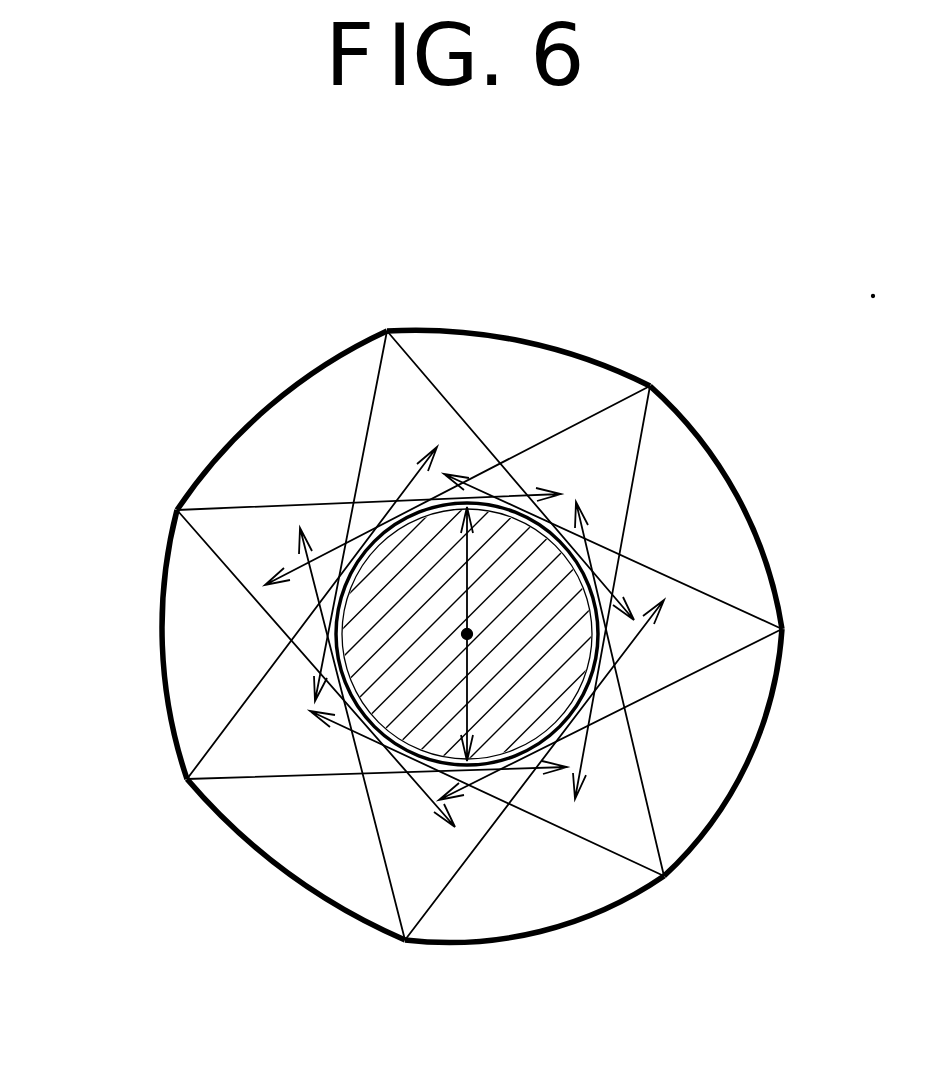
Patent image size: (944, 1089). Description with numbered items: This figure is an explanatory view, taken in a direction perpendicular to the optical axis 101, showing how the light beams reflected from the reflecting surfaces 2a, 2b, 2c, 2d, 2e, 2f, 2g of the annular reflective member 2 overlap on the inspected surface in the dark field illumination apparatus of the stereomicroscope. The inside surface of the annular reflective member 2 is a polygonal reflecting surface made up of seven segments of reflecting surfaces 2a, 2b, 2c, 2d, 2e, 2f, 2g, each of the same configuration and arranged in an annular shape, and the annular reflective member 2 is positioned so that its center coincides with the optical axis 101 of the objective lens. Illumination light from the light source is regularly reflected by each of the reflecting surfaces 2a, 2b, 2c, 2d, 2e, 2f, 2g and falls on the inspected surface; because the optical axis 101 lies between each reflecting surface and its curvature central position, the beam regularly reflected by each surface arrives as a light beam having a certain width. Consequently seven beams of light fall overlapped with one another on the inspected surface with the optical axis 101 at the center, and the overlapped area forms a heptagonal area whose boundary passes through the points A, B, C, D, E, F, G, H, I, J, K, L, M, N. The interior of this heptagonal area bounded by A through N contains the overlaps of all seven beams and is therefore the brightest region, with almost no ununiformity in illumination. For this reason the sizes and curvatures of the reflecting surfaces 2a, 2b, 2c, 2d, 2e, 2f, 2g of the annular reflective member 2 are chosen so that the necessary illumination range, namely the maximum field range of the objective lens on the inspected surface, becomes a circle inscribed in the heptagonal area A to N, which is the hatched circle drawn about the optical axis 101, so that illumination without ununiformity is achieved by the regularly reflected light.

The annular reflective member 2 is at (643, 330).
The reflecting surface 2a is at (171, 676).
The reflecting surface 2b is at (268, 860).
The reflecting surface 2c is at (549, 915).
The reflecting surface 2d is at (762, 727).
The reflecting surface 2e is at (757, 528).
The reflecting surface 2f is at (514, 333).
The reflecting surface 2g is at (293, 389).
The optical axis 101 is at (471, 637).
The vertex of heptagonal area A is at (432, 490).
The vertex of heptagonal area B is at (380, 527).
The vertex of heptagonal area C is at (318, 578).
The vertex of heptagonal area D is at (302, 648).
The vertex of heptagonal area E is at (312, 722).
The vertex of heptagonal area F is at (373, 767).
The vertex of heptagonal area G is at (427, 800).
The vertex of heptagonal area H is at (510, 790).
The vertex of heptagonal area I is at (567, 747).
The vertex of heptagonal area J is at (610, 688).
The vertex of heptagonal area K is at (612, 627).
The vertex of heptagonal area L is at (640, 537).
The vertex of heptagonal area M is at (563, 490).
The vertex of heptagonal area N is at (493, 458).